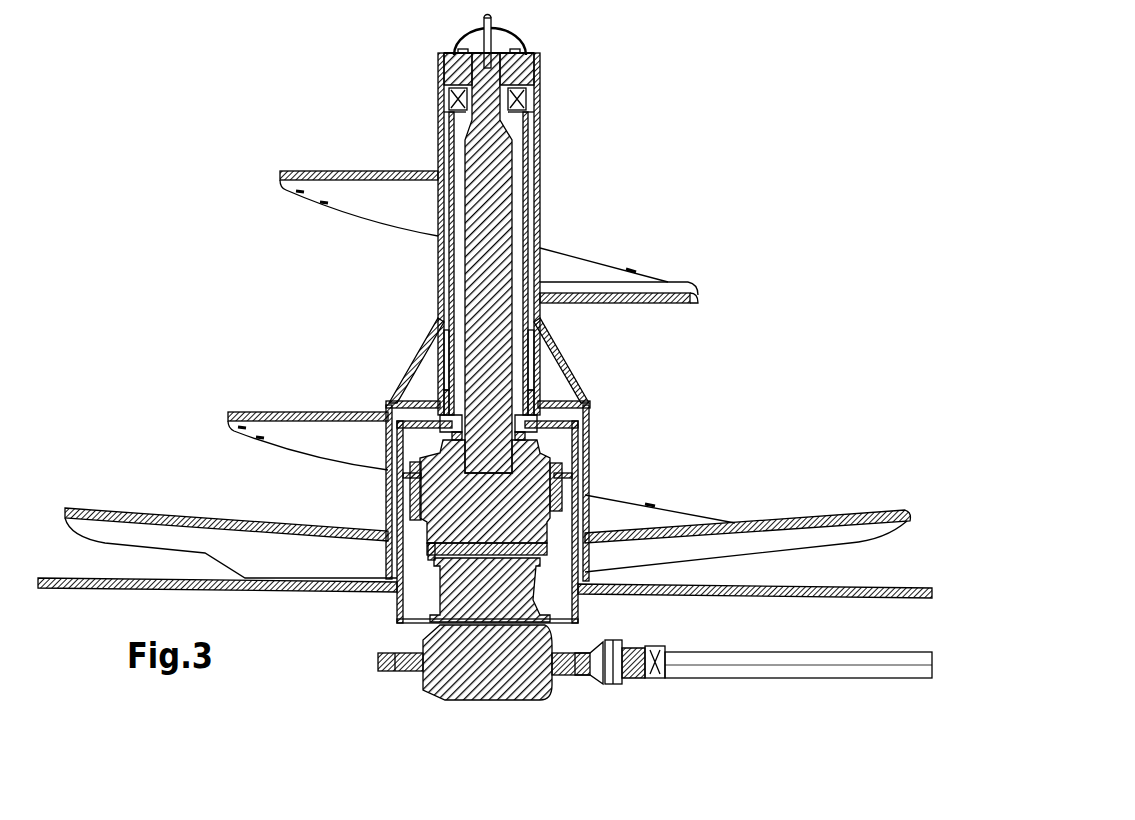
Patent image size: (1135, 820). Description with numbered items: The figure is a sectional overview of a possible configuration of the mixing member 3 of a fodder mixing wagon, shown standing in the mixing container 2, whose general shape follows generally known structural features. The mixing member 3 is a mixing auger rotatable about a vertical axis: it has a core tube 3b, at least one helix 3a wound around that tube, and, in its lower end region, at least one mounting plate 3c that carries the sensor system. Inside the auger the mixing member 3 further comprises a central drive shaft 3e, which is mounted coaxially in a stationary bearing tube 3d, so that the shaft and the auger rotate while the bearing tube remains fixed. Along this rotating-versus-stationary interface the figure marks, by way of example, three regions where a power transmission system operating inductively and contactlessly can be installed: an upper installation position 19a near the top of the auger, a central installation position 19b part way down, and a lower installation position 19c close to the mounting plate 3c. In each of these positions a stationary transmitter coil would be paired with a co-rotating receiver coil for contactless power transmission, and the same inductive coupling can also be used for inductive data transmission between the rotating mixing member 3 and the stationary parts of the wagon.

The mixing container 2 is at (760, 593).
The mixing member 3 is at (398, 95).
The helix 3a is at (317, 171).
The core tube 3b is at (536, 208).
The mounting plate 3c is at (192, 514).
The bearing tube 3d is at (528, 240).
The central drive shaft 3e is at (512, 180).
The upper installation position 19a is at (543, 85).
The central installation position 19b is at (545, 358).
The lower installation position 19c is at (572, 404).